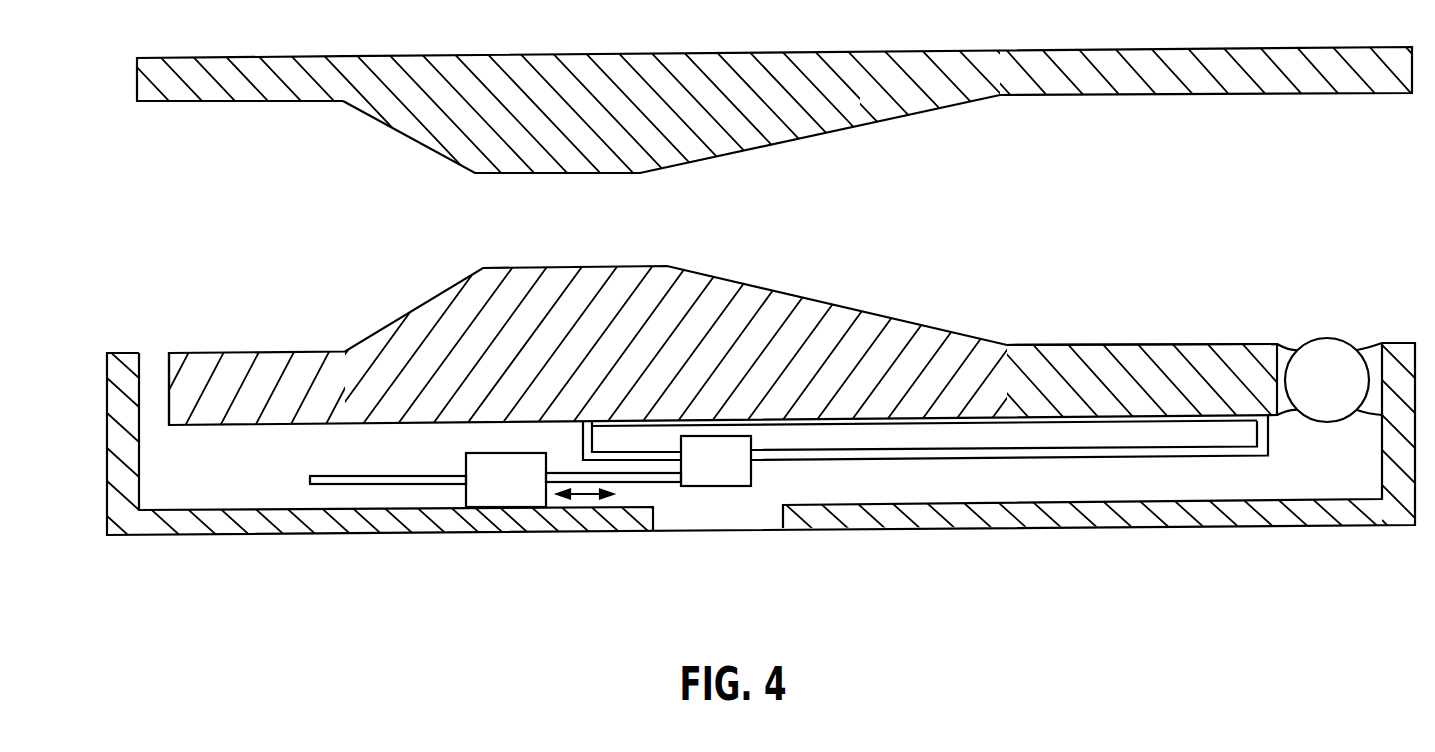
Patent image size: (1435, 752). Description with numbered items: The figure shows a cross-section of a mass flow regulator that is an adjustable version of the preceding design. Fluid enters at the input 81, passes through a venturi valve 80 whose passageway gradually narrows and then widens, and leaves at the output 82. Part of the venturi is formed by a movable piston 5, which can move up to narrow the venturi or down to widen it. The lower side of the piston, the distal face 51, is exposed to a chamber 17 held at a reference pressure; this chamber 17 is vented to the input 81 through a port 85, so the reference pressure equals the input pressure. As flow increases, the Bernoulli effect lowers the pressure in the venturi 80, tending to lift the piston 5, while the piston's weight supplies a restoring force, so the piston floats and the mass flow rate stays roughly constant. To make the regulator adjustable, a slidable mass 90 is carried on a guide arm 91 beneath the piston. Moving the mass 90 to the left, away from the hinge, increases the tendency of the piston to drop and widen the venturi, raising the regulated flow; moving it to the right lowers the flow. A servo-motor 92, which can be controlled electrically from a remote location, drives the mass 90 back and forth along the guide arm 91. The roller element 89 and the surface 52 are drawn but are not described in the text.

The piston 5 is at (933, 362).
The chamber 17 is at (337, 464).
The distal face 51 is at (1142, 421).
The flat top surface 52 is at (1188, 342).
The venturi valve 80 is at (557, 225).
The input 81 is at (156, 201).
The output 82 is at (1292, 228).
The port 85 is at (152, 355).
The roller 89 is at (1311, 396).
The slidable mass 90 is at (713, 487).
The guide arm 91 is at (850, 462).
The servo-motor 92 is at (490, 490).